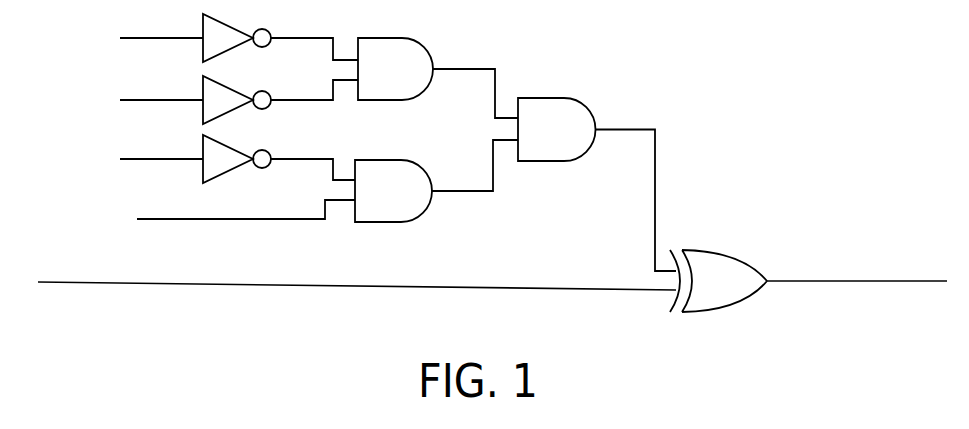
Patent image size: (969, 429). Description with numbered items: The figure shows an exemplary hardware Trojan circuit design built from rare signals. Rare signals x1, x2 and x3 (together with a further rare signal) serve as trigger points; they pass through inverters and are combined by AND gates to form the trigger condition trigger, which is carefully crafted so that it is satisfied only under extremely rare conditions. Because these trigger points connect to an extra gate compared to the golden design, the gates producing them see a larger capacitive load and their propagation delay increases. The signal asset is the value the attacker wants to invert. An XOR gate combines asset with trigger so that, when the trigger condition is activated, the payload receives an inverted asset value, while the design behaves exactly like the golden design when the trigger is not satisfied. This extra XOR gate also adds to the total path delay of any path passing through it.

The rare signal x1 is at (217, 38).
The rare signal x2 is at (217, 110).
The rare signal x3 is at (215, 177).
The element trigger is at (636, 178).
The element asset is at (353, 263).
The element payload is at (857, 257).